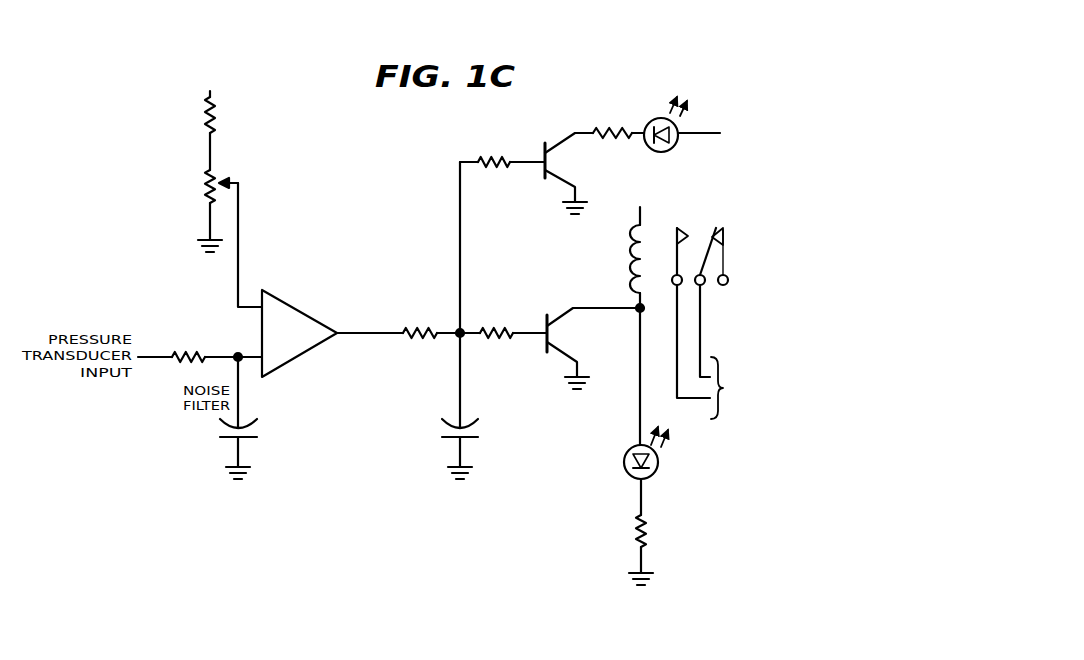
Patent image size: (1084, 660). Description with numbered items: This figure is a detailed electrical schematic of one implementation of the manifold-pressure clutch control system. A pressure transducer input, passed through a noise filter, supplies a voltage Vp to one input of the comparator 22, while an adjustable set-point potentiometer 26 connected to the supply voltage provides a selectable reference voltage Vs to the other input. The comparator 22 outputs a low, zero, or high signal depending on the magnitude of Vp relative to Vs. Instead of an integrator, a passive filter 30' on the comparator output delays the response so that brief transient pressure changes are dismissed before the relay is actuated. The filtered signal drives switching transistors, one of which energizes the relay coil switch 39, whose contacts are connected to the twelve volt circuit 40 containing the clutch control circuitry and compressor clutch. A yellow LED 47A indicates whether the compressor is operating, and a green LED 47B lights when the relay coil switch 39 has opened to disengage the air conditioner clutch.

The comparator 22 is at (300, 342).
The adjustable set-point potentiometer 26 is at (222, 181).
The passive filter 30' is at (408, 320).
The relay coil switch 39 is at (630, 258).
The 12 volt circuit 40 is at (739, 324).
The yellow LED display 47A is at (671, 149).
The green LED display 47B is at (656, 471).